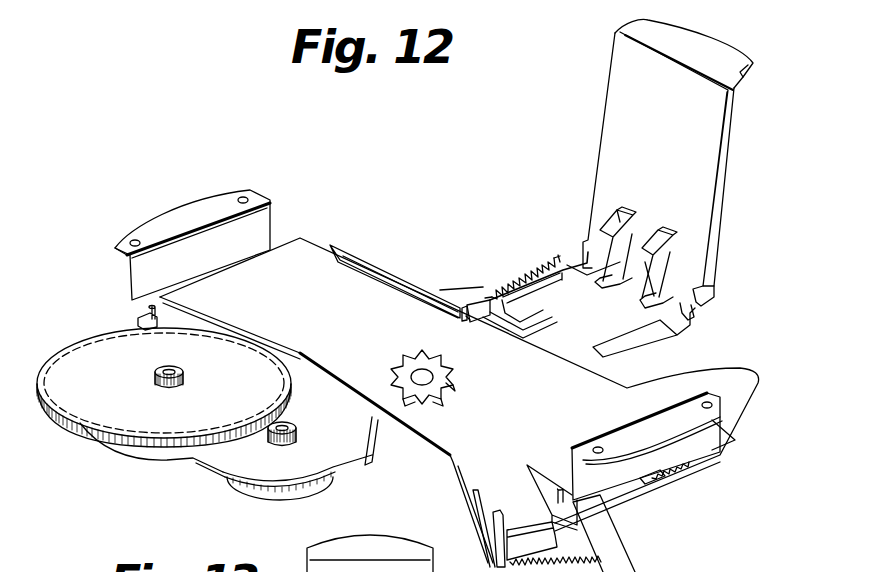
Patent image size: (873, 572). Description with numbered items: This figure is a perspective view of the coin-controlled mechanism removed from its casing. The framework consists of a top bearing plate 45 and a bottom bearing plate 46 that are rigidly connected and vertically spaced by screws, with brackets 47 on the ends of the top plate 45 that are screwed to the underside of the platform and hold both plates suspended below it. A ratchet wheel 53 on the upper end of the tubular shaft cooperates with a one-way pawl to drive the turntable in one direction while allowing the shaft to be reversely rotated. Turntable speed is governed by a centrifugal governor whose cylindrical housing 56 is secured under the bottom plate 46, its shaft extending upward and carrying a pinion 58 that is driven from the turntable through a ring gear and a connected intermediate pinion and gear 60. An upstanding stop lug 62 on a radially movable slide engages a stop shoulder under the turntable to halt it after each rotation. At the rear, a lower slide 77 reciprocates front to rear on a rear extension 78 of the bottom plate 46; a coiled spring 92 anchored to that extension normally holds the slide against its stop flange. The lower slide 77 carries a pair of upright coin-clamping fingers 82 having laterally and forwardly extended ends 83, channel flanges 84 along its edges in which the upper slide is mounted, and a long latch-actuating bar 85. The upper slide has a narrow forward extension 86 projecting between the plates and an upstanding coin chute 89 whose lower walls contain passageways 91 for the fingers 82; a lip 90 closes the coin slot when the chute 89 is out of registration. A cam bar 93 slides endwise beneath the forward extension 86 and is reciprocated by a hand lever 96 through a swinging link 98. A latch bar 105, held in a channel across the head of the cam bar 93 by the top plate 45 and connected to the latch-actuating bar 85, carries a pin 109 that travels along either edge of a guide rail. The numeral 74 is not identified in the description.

The top bearing plate 45 is at (448, 400).
The bottom bearing plate 46 is at (620, 495).
The brackets 47 is at (165, 225).
The ratchet wheel 53 is at (438, 396).
The cylindrical housing 56 is at (255, 503).
The pinion 58 is at (300, 434).
The intermediate pinion and gear 60 is at (165, 380).
The stop lug 62 is at (498, 512).
The rear deck 74 is at (593, 291).
The lower slide 77 is at (523, 334).
The rear extension 78 is at (478, 300).
The coin-clamping fingers 82 is at (662, 265).
The laterally and forwardly extended ends 83 is at (612, 227).
The channel flanges 84 is at (640, 342).
The latch-actuating bar 85 is at (395, 270).
The forward extension 86 is at (372, 430).
The coin chute 89 is at (698, 150).
The lip 90 is at (723, 50).
The passageways 91 is at (628, 218).
The coiled spring 92 is at (527, 272).
The cam bar 93 is at (655, 487).
The hand lever 96 is at (612, 540).
The swinging link 98 is at (672, 475).
The latch bar 105 is at (460, 312).
The pin 109 is at (467, 324).